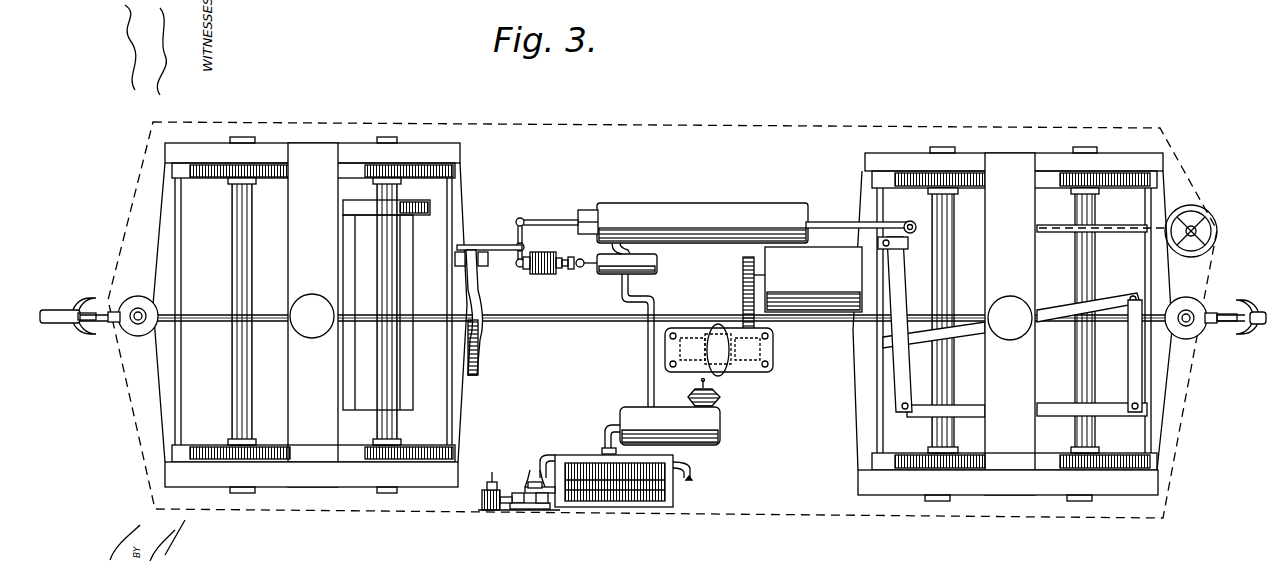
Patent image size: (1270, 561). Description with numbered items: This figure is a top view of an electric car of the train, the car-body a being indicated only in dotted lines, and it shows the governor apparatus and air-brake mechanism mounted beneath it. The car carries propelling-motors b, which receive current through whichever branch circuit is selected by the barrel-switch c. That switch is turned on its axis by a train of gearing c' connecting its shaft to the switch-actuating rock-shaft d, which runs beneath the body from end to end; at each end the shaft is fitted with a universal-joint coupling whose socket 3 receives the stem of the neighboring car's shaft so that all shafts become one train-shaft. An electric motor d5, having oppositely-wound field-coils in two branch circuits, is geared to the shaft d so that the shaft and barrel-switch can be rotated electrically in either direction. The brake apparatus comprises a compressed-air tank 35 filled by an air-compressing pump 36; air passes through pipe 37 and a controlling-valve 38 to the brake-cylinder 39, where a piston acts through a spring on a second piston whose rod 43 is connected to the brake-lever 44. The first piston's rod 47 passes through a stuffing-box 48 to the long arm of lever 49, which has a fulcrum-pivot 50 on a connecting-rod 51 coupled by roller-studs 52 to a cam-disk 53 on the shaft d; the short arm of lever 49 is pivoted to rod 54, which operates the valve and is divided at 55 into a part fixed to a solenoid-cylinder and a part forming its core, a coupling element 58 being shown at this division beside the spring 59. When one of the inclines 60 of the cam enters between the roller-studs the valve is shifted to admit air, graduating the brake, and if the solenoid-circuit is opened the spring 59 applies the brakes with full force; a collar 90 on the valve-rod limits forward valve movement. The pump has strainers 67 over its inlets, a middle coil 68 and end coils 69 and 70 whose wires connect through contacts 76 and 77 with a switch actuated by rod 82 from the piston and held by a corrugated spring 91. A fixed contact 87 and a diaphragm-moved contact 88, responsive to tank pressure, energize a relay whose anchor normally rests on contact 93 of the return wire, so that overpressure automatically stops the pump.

The car a is at (662, 309).
The switch-actuating rock-shaft d is at (652, 330).
The electric motor d5 is at (733, 358).
The socket 3 is at (55, 323).
The propelling-motor b is at (400, 382).
The barrel-switch c is at (813, 279).
The train of gearing c' is at (742, 293).
The compressed-air-holding tank 35 is at (720, 432).
The air-compressing pump 36 is at (600, 452).
The pipe 37 is at (648, 355).
The controlling-valve 38 is at (657, 264).
The brake-cylinder 39 is at (684, 204).
The rod 43 is at (824, 222).
The brake-lever 44 is at (900, 370).
The piston-rod 47 is at (552, 220).
The stuffing-box 48 is at (588, 210).
The lever 49 is at (520, 218).
The fulcrum-pivot 50 is at (525, 247).
The connecting-rod 51 is at (504, 244).
The roller-studs 52 is at (456, 262).
The cam-disk 53 is at (480, 358).
The rod 54 is at (526, 270).
The division of rod 55 is at (543, 275).
The coupling 58 is at (576, 252).
The spring 59 is at (580, 268).
The inclines 60 is at (481, 292).
The strainer 67 is at (541, 462).
The middle coil 68 is at (637, 507).
The end coil 69 is at (597, 507).
The end coil 70 is at (660, 507).
The contact 76 is at (517, 509).
The contact 77 is at (556, 494).
The rod 82 is at (533, 470).
The fixed contact 87 is at (700, 383).
The movable contact 88 is at (722, 390).
The relay-magnet 90 is at (490, 510).
The corrugated spring 91 is at (485, 492).
The contact 93 is at (491, 472).